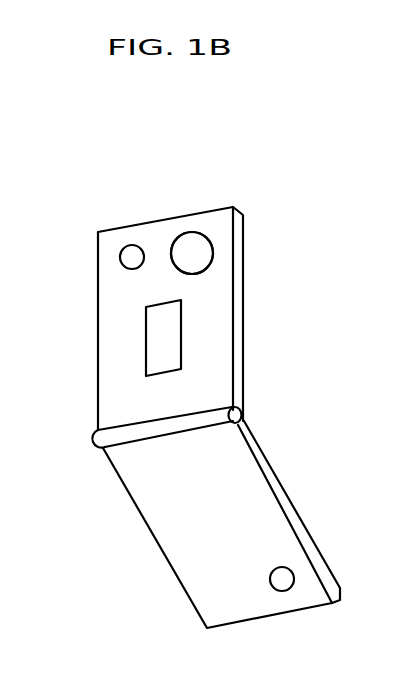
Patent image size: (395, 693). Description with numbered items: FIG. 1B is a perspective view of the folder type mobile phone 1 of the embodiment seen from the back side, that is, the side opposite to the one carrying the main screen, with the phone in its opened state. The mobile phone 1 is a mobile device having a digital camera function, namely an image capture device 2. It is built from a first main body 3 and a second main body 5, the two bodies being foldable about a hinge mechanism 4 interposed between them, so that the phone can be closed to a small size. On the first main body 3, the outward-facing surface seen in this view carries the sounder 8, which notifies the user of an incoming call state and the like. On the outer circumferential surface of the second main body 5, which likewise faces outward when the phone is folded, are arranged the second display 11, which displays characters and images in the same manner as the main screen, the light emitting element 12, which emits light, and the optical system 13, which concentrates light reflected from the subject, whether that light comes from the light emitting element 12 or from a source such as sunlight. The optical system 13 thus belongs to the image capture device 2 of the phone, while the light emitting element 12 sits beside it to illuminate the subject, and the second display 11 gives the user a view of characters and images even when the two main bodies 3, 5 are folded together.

The mobile phone 1 is at (241, 152).
The image capture device 2 is at (192, 253).
The optical system 13 is at (192, 253).
The first main body 3 is at (282, 495).
The hinge mechanism 4 is at (241, 413).
The second main body 5 is at (235, 302).
The sounder 8 is at (282, 579).
The second display 11 is at (160, 327).
The light emitting element 12 is at (132, 257).